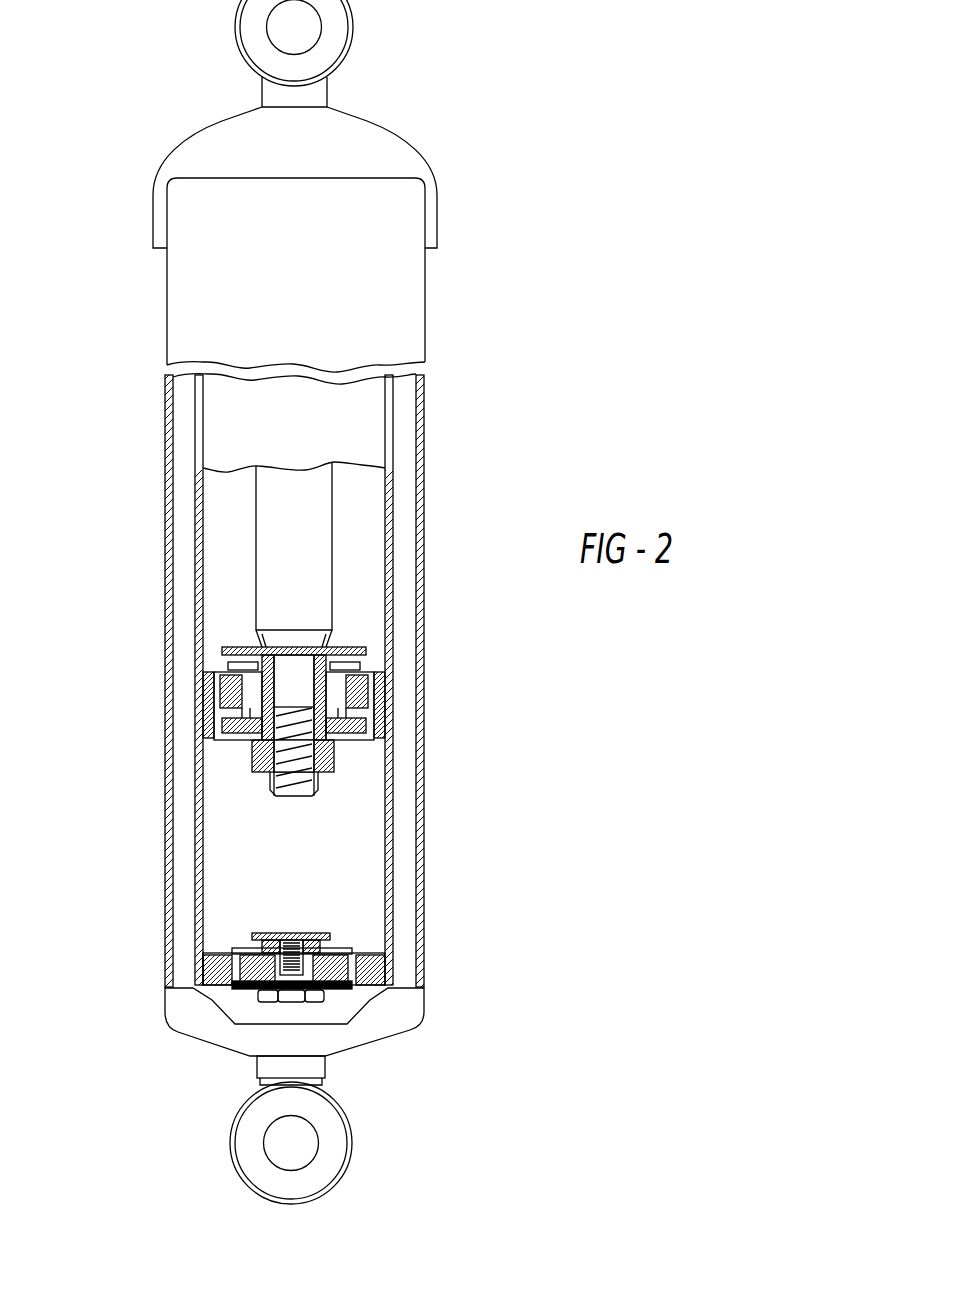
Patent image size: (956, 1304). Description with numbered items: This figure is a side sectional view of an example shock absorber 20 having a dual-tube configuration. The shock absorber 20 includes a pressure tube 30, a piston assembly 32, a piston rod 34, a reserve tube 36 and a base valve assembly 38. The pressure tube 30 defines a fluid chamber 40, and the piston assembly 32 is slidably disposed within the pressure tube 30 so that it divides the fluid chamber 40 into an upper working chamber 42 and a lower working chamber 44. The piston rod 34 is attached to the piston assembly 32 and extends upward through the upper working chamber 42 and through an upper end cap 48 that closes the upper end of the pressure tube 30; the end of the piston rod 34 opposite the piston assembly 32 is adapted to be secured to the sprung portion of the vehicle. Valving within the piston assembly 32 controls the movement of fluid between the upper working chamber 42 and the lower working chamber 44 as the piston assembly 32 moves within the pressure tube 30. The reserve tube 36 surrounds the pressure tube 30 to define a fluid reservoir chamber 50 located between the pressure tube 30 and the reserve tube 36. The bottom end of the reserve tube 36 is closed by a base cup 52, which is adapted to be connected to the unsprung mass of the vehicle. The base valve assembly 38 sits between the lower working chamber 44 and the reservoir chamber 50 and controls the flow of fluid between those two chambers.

The shock absorber 20 is at (460, 85).
The pressure tube 30 is at (387, 490).
The piston assembly 32 is at (378, 690).
The piston rod 34 is at (297, 548).
The reserve tube 36 is at (424, 770).
The base valve assembly 38 is at (383, 948).
The fluid chamber 40 is at (296, 863).
The upper working chamber 42 is at (352, 567).
The lower working chamber 44 is at (233, 800).
The upper end cap 48 is at (375, 200).
The fluid reservoir chamber 50 is at (187, 518).
The base cup 52 is at (205, 1020).